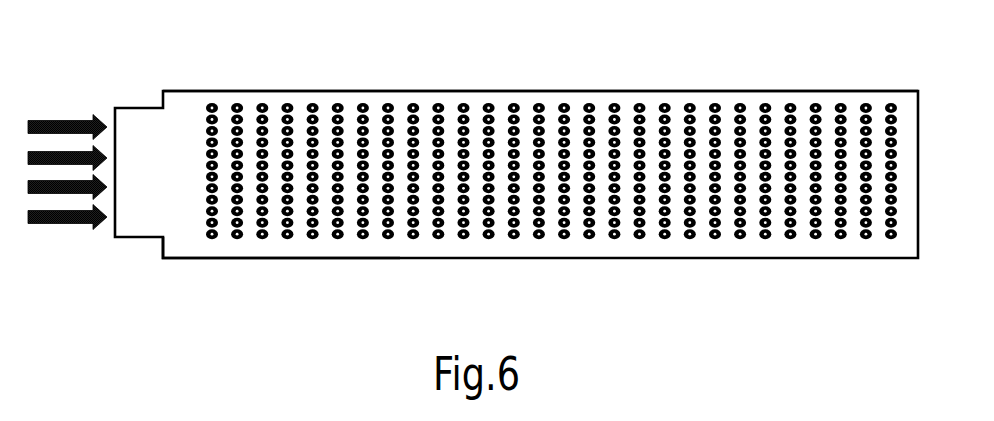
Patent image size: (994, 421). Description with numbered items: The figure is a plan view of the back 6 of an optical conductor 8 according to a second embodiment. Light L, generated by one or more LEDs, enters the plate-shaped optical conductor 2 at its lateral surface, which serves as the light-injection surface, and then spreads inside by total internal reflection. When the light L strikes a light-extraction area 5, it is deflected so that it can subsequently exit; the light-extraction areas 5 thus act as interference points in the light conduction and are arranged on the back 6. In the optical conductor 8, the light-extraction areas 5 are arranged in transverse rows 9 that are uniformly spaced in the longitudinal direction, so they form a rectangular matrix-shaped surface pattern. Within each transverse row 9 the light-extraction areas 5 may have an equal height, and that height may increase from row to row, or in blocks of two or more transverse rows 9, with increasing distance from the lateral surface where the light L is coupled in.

The light L is at (70, 120).
The optical conductor 2 is at (115, 234).
The light-extraction areas 5 is at (551, 121).
The back 6 is at (178, 243).
The optical conductor 8 is at (313, 88).
The transverse rows 9 is at (588, 92).